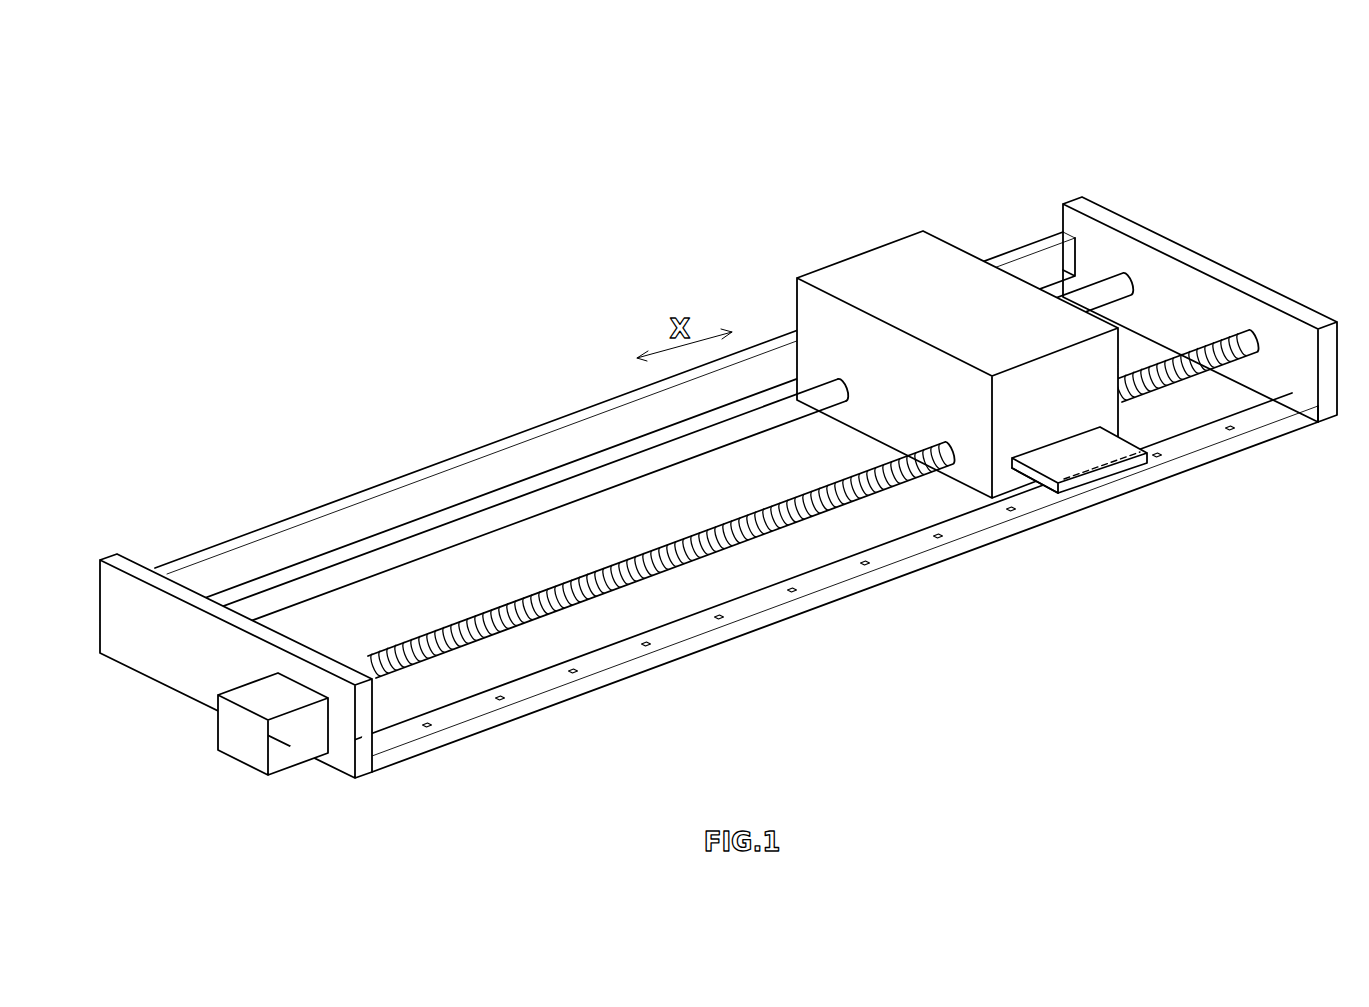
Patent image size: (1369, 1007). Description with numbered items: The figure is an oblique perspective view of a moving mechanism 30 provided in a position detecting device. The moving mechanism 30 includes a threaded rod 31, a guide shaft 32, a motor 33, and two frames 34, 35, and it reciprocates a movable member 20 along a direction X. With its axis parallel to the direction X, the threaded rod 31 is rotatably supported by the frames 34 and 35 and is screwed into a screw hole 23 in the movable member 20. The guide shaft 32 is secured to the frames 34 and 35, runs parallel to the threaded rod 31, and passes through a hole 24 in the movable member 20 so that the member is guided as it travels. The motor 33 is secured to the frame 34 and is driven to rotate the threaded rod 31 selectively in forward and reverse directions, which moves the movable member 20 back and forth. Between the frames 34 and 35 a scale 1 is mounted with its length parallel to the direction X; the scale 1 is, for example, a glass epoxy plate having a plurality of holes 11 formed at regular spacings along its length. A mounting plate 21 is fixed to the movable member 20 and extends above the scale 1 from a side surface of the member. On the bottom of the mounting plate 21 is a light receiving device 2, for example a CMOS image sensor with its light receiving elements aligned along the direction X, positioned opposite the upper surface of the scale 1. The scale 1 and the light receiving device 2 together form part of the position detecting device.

The scale 1 is at (832, 582).
The holes 11 is at (950, 534).
The light receiving device 2 is at (1110, 478).
The movable member 20 is at (854, 250).
The mounting plate 21 is at (1182, 498).
The screw hole 23 is at (1023, 490).
The hole 24 is at (830, 372).
The moving mechanism 30 is at (258, 321).
The threaded rod 31 is at (717, 530).
The guide shaft 32 is at (505, 506).
The motor 33 is at (250, 750).
The frame 34 is at (118, 553).
The frame 35 is at (1082, 194).